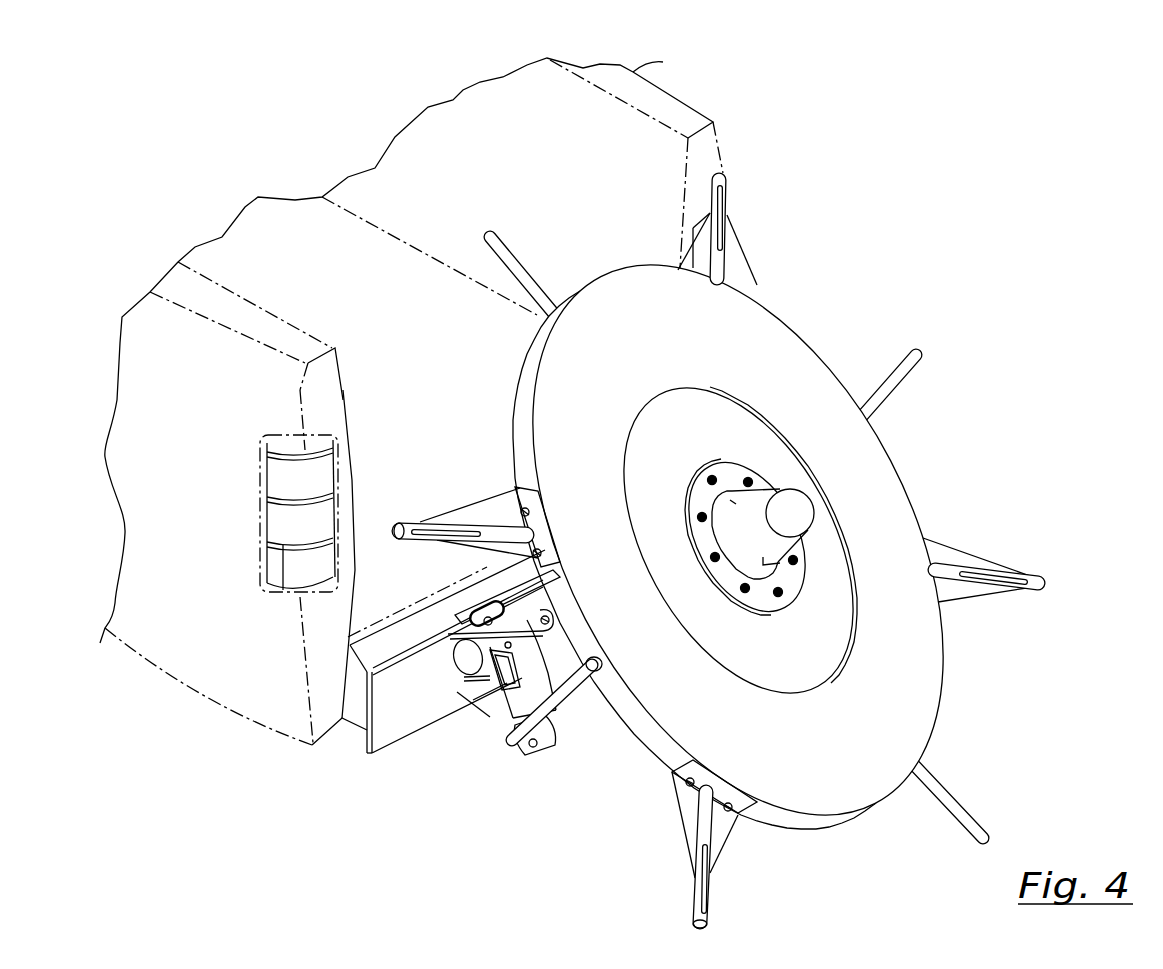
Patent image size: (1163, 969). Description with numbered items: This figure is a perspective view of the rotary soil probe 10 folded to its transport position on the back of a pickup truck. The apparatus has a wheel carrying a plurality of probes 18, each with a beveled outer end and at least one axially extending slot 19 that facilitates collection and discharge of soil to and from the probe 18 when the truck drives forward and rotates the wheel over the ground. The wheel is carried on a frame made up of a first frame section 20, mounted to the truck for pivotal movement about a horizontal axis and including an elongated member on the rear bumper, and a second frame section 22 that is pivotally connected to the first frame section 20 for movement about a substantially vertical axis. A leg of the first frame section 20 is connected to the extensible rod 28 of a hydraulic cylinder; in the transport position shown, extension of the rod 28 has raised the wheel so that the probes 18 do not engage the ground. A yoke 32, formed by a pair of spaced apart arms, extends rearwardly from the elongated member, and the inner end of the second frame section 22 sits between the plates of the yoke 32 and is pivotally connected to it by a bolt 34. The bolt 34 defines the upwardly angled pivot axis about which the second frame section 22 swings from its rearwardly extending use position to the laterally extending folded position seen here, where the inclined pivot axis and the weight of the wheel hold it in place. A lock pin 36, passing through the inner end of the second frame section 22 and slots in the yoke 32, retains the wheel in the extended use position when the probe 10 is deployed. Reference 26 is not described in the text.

The rotary soil probe 10 is at (922, 440).
The probes 18 is at (725, 254).
The axially extending slot 19 is at (727, 193).
The first frame section 20 is at (455, 684).
The second frame section 22 is at (497, 696).
The pivot bracket 26 is at (548, 752).
The extensible rod 28 is at (508, 692).
The yoke 32 is at (513, 602).
The bolt 34 is at (545, 710).
The lock pin 36 is at (480, 612).